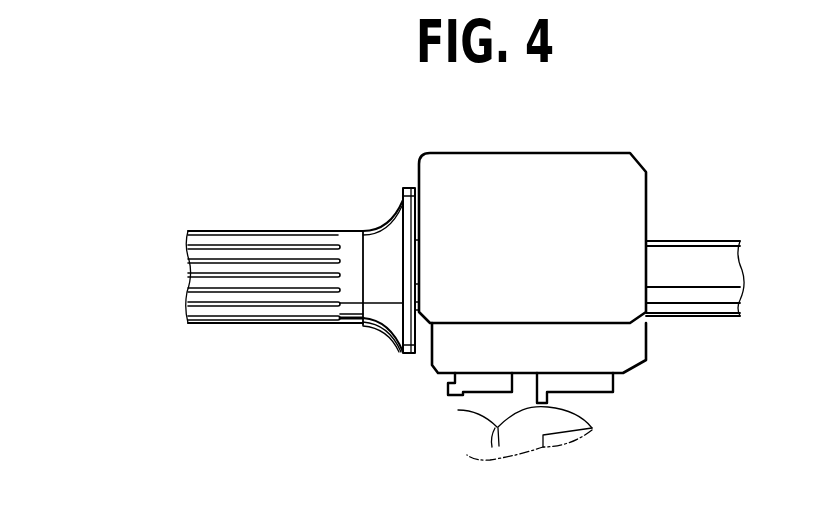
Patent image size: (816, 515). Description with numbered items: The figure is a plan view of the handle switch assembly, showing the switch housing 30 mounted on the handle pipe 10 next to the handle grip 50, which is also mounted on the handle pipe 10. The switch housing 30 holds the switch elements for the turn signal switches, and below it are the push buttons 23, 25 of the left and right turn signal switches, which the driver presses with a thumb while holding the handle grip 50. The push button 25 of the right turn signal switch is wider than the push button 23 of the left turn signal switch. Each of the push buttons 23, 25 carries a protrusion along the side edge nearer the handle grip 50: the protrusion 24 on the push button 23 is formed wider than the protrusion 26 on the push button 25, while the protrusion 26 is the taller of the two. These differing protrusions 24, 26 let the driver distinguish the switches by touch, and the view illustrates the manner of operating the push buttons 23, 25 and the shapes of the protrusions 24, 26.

The handle pipe 10 is at (680, 250).
The switch housing 30 is at (545, 160).
The handle grip 50 is at (377, 232).
The protrusion 24 is at (448, 393).
The push button 25 is at (600, 382).
The push button 23 is at (490, 378).
The protrusion 26 is at (548, 402).